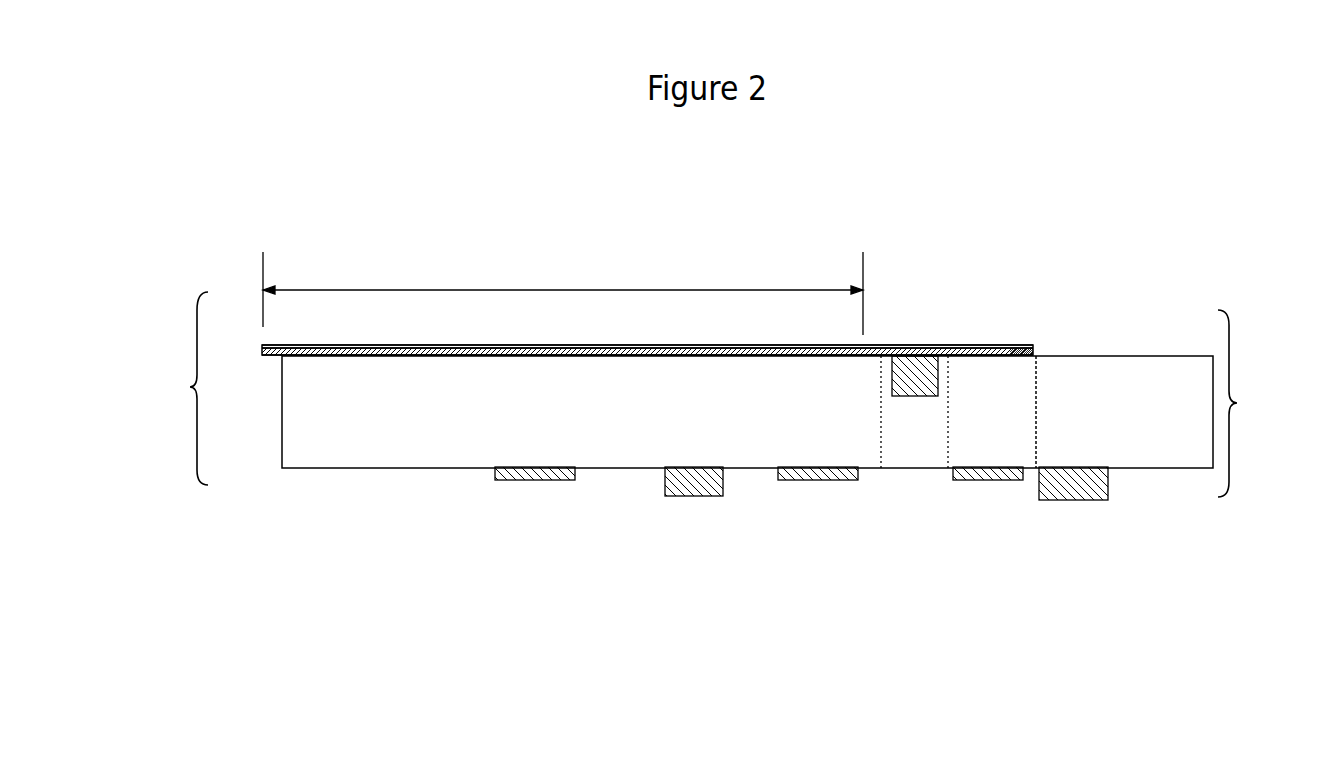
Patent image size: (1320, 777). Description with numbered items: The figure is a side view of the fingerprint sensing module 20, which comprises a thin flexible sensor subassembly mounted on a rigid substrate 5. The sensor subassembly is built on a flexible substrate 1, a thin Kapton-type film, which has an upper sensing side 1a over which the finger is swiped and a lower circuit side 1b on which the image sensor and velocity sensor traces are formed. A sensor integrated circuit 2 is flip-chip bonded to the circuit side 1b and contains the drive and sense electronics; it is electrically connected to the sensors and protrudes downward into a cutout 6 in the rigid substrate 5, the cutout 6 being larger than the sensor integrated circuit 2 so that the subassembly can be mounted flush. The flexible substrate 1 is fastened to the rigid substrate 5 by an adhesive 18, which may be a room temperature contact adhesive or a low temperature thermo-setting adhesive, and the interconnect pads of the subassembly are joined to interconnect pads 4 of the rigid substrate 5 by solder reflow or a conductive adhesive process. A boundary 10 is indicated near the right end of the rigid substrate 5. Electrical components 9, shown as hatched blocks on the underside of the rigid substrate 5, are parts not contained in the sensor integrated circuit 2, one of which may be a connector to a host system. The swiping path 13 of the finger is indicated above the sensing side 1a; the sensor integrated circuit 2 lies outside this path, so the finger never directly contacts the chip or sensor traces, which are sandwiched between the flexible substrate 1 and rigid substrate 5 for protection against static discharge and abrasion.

The flexible substrate 1 is at (649, 355).
The sensing side 1a is at (425, 345).
The circuit side 1b is at (408, 353).
The sensor integrated circuit 2 is at (915, 360).
The interconnect pads 4 is at (1037, 352).
The rigid substrate 5 is at (256, 415).
The cutout 6 is at (877, 424).
The electrical components 9 is at (537, 481).
The boundary line 10 is at (1040, 405).
The swiping path 13 is at (563, 291).
The adhesive 18 is at (262, 352).
The fingerprint sensing module 20 is at (704, 394).